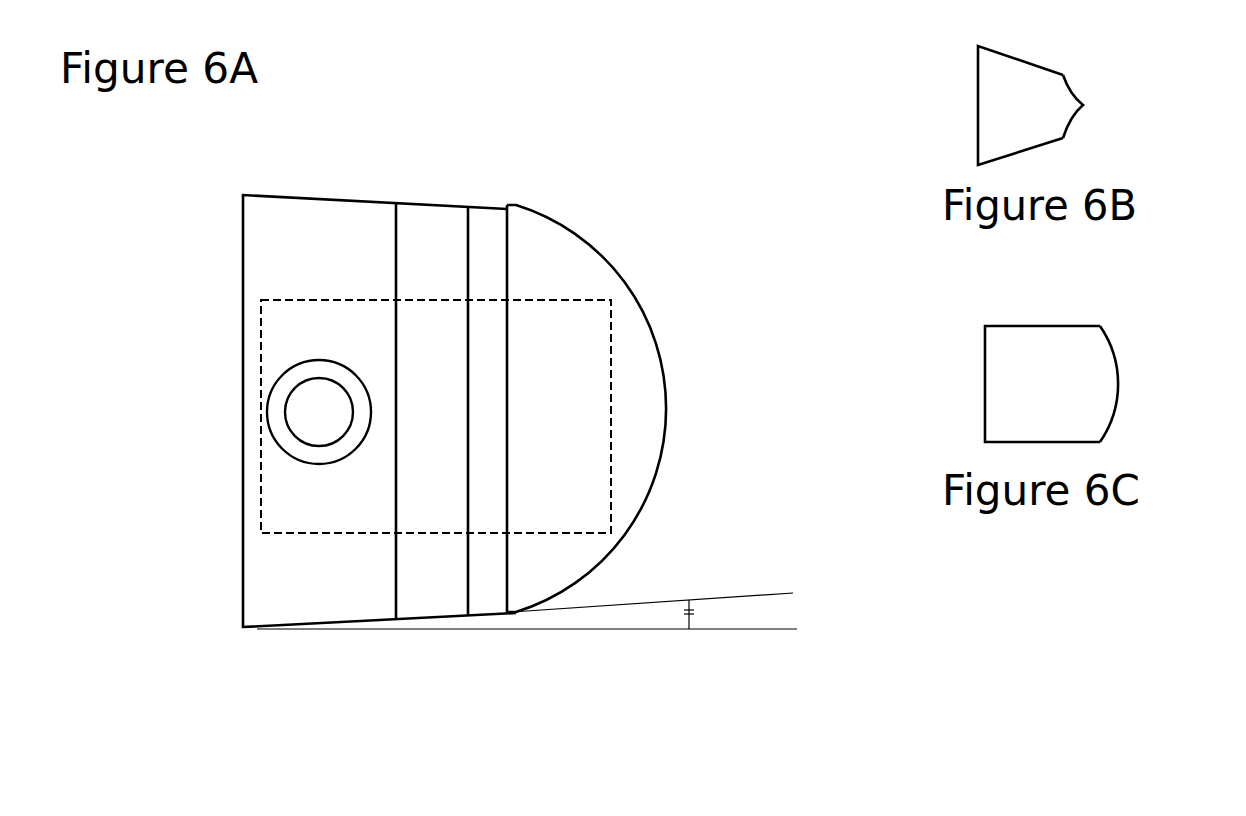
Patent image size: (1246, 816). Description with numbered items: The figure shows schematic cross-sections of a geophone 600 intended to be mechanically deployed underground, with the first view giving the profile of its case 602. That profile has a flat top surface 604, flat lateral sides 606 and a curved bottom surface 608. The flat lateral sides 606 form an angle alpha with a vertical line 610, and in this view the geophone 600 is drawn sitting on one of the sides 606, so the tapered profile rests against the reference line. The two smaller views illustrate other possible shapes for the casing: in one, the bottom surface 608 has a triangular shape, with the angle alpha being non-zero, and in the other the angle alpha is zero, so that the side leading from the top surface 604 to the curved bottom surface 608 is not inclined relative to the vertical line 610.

In FIG. 6A, the geophone 600 is at (452, 103).
In FIG. 6A, the case 602 is at (557, 240).
In FIG. 6A, the flat top surface 604 is at (243, 311).
In FIG. 6B, the flat top surface 604 is at (978, 100).
In FIG. 6C, the flat top surface 604 is at (985, 398).
In FIG. 6A, the flat lateral sides 606 is at (370, 200).
In FIG. 6A, the curved bottom surface 608 is at (665, 381).
In FIG. 6B, the curved bottom surface 608 is at (1075, 94).
In FIG. 6C, the curved bottom surface 608 is at (1118, 379).
In FIG. 6A, the vertical line 610 is at (773, 630).